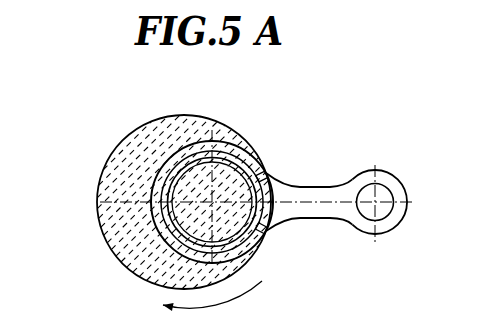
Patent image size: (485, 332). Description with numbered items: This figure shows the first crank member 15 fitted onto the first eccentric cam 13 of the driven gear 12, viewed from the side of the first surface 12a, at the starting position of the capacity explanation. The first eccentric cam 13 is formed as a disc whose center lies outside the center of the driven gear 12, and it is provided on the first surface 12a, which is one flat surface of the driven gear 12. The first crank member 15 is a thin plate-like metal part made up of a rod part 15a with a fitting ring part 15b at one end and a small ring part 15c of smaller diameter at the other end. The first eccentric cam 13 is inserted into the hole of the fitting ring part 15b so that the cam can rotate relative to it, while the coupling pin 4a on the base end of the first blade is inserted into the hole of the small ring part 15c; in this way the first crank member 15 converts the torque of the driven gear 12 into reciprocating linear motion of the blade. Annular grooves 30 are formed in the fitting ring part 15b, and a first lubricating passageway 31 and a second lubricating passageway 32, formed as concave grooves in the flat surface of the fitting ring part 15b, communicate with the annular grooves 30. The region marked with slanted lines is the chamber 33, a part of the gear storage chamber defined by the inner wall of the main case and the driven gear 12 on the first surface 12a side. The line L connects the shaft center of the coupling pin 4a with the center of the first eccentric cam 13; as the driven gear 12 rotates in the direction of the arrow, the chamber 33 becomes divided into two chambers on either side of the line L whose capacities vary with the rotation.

The driven gear 12 is at (154, 202).
The first surface 12a is at (103, 233).
The first eccentric cam 13 is at (195, 222).
The first crank member 15 is at (378, 101).
The rod part 15a is at (320, 195).
The fitting ring part 15b is at (245, 153).
The small ring part 15c is at (369, 180).
The annular grooves 30 is at (194, 162).
The first lubricating passageway 31 is at (268, 173).
The second lubricating passageway 32 is at (266, 238).
The chamber 33 is at (127, 165).
The coupling pin 4a is at (383, 197).
The line L is at (336, 208).